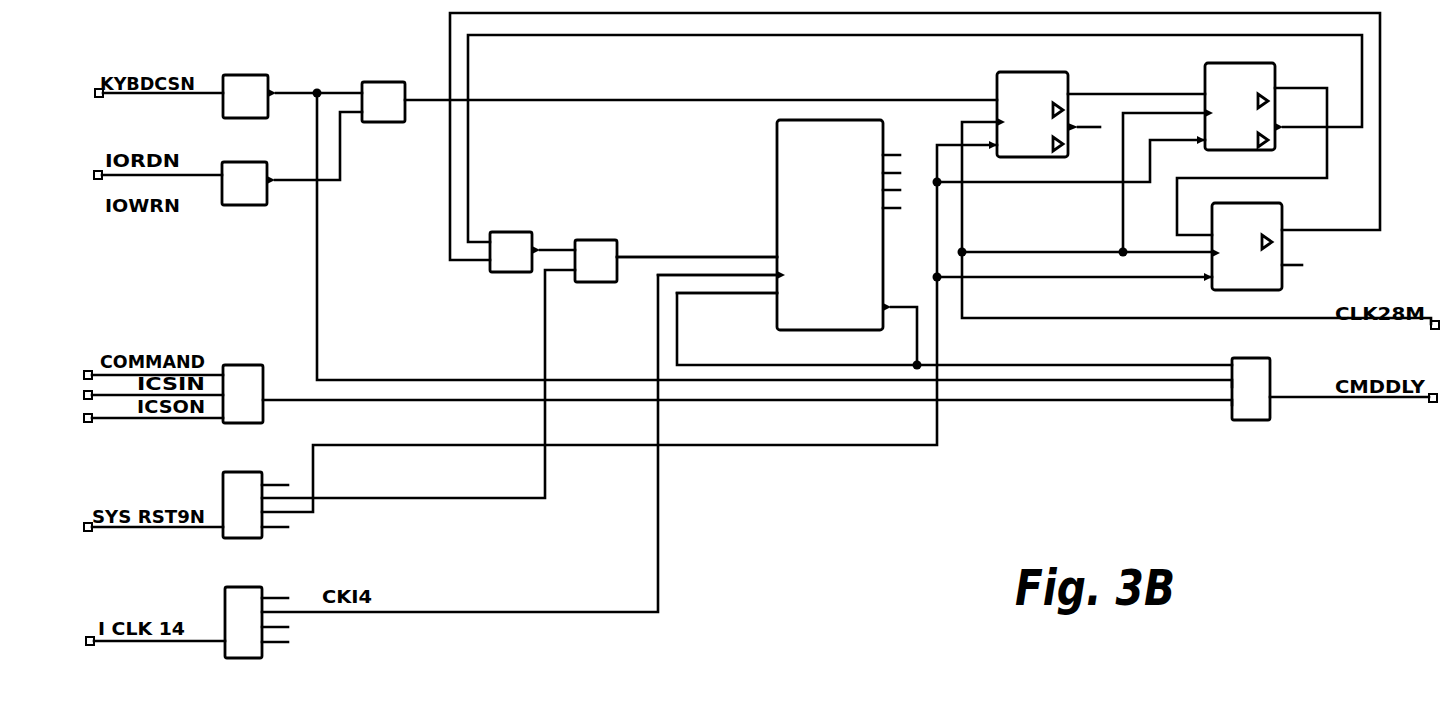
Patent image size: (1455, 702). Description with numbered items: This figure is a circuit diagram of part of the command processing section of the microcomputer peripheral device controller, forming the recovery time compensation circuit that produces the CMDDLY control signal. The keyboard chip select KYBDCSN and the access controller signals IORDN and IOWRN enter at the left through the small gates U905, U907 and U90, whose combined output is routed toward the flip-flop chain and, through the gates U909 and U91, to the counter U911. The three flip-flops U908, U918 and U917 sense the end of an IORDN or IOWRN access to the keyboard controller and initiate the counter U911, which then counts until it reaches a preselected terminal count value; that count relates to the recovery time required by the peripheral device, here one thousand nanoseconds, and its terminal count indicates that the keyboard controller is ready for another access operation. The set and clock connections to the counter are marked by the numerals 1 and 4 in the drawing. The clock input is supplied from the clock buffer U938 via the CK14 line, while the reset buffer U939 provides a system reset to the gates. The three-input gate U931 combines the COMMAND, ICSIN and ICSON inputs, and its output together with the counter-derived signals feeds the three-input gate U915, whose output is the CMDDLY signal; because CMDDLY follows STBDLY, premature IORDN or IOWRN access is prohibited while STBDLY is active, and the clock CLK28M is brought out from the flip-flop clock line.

The ASET signal line 1 is at (748, 249).
The clock/enable signal lines 4 is at (765, 290).
The inverter IV-IHBIDI U905 is at (232, 97).
The NAND gate NDB2DI U907 is at (250, 197).
The AND gate ANB2DI U90 is at (395, 117).
The NAND gate NDB2DI U909 is at (502, 265).
The AND gate ANB2DI U91 is at (602, 262).
The counter U911 is at (779, 108).
The flip-flop U908 is at (1037, 115).
The flip-flop U918 is at (1232, 109).
The flip-flop U917 is at (1242, 250).
The 3-input AND gate AN3-ANB3DI U915 is at (1241, 391).
The 3-input NAND gate ND3-ND0301 U931 is at (206, 396).
The reset buffer U939 is at (246, 493).
The clock buffer U938 is at (244, 611).